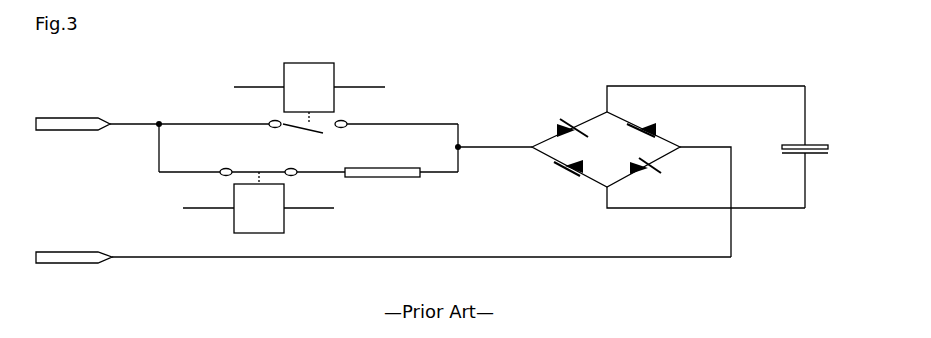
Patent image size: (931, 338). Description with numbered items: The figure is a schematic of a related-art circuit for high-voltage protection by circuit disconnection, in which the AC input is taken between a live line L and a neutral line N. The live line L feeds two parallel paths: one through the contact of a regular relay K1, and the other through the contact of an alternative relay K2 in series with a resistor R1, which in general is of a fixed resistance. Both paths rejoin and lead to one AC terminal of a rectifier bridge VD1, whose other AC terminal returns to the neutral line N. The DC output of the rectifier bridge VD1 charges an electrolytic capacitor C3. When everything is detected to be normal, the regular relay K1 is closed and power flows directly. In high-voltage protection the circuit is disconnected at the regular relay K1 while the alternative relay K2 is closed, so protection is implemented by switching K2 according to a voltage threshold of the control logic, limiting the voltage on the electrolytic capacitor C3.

The live line L is at (73, 113).
The neutral line N is at (74, 246).
The regular relay K1 is at (309, 98).
The alternative relay K2 is at (258, 201).
The resistor R1 is at (382, 157).
The rectifier bridge VD1 is at (598, 156).
The electrolytic capacitor C3 is at (796, 147).